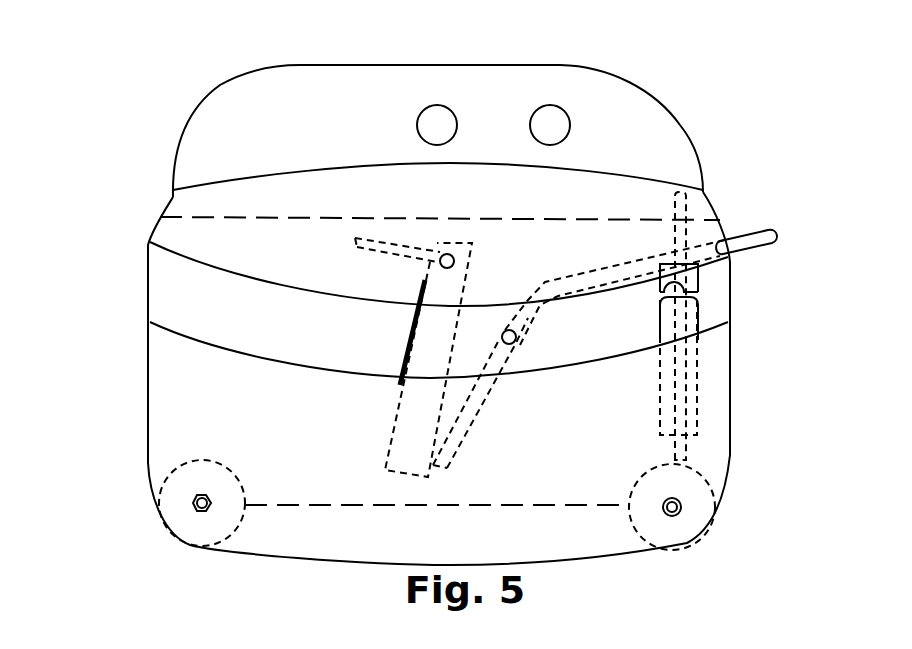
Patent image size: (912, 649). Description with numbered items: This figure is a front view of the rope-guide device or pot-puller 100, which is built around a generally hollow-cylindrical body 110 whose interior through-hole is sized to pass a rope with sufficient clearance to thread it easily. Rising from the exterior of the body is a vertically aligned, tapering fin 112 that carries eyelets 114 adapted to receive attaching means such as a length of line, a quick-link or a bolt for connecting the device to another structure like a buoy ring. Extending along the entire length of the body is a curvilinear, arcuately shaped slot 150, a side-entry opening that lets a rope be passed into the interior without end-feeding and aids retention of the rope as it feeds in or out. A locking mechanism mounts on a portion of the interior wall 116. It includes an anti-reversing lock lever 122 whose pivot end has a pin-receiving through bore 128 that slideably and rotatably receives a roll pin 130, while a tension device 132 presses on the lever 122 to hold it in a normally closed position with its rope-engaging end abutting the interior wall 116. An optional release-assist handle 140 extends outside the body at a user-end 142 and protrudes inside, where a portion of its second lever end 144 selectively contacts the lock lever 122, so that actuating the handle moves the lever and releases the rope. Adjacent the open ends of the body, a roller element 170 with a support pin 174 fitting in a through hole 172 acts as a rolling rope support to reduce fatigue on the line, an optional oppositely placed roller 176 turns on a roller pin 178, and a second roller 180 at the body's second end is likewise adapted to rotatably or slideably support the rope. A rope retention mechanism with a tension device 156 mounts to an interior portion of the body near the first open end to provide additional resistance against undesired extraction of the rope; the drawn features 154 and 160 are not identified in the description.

The pot-puller 100 is at (695, 70).
The hollow-cylindrical body 110 is at (568, 65).
The fin 112 is at (202, 110).
The eyelets 114 is at (424, 108).
The interior wall 116 is at (162, 290).
The anti-reversing lock lever 122 is at (390, 450).
The pin-receiving through bore 128 is at (437, 245).
The roll pin 130 is at (430, 270).
The tension device 132 is at (403, 352).
The release-assist handle 140 is at (603, 265).
The user-end 142 is at (795, 217).
The second lever end 144 is at (465, 430).
The arcuately shaped slot 150 is at (130, 303).
The latch bracket 154 is at (700, 276).
The tension device 156 is at (660, 300).
The guide rod 160 is at (705, 365).
The roller element 170 is at (690, 470).
The through hole 172 is at (681, 500).
The support pin 174 is at (682, 511).
The roller 176 is at (186, 466).
The roller pin 178 is at (196, 499).
The second roller 180 is at (192, 512).